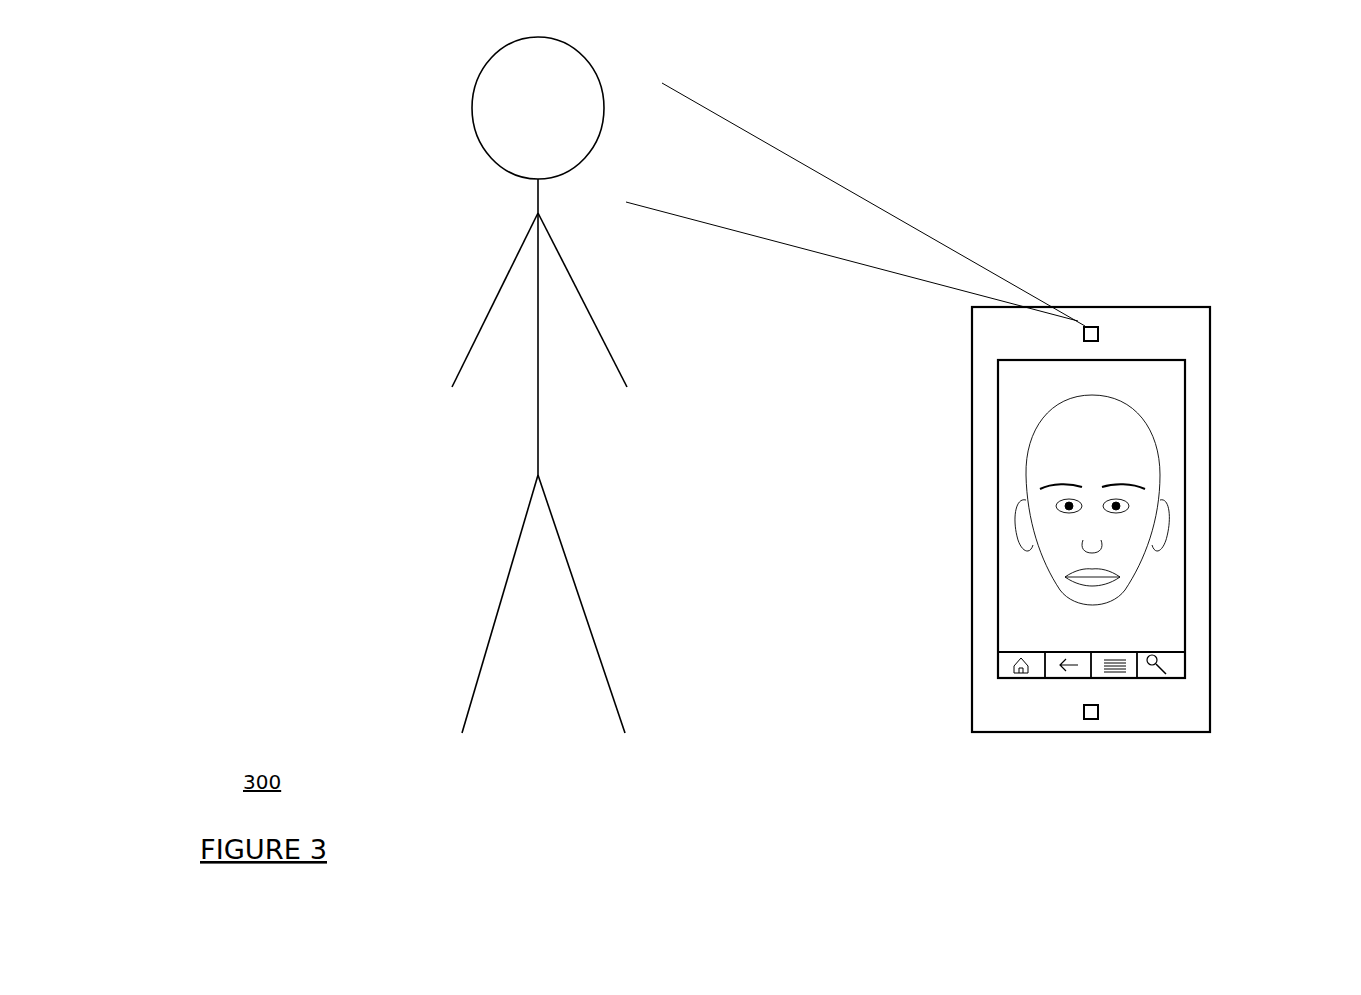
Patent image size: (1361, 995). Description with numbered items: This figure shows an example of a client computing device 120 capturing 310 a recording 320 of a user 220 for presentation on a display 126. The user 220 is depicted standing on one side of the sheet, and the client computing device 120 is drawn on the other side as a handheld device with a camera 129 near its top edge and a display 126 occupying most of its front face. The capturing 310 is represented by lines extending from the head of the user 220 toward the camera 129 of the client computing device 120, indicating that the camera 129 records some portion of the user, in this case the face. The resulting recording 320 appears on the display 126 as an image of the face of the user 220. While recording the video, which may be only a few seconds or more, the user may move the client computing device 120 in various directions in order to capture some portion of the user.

The client computing device 120 is at (1212, 636).
The display 126 is at (1185, 440).
The camera 129 is at (1091, 322).
The user 220 is at (510, 276).
The capturing 310 is at (945, 240).
The recording 320 is at (1020, 507).